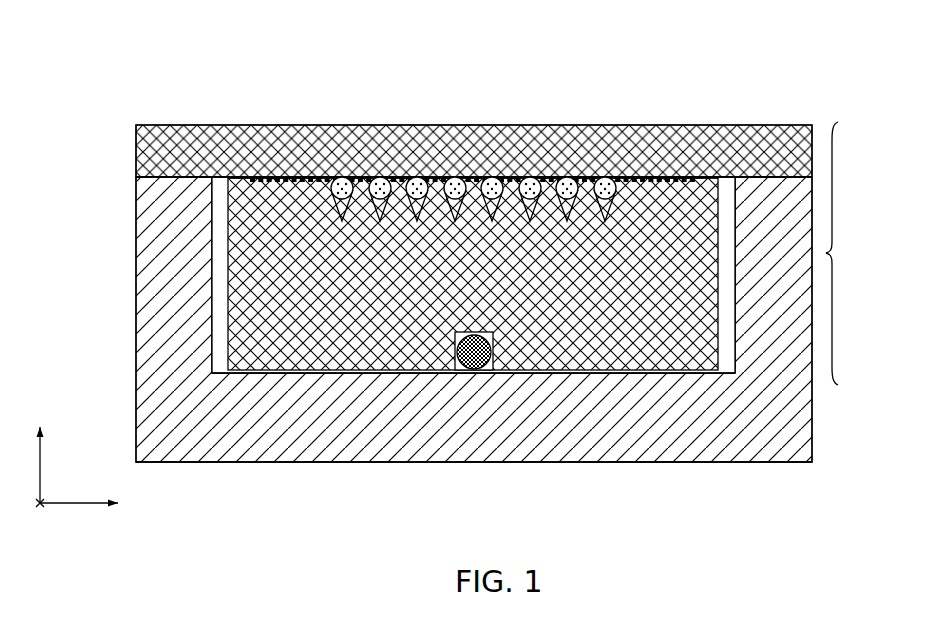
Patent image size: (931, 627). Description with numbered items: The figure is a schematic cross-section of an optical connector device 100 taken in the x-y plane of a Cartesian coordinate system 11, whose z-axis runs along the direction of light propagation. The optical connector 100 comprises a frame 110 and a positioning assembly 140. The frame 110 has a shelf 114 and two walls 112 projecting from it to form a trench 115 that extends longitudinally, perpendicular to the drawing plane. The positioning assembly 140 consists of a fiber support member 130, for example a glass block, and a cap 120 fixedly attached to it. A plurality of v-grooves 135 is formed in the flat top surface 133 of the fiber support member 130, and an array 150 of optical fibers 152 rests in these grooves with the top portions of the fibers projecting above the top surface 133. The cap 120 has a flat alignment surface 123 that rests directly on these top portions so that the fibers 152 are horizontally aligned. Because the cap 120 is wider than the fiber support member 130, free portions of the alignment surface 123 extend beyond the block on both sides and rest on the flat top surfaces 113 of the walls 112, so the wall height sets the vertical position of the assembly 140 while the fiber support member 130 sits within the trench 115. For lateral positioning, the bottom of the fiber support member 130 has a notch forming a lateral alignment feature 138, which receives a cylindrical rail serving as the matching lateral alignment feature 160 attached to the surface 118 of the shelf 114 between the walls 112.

The optical connector device 100 is at (495, 45).
The frame 110 is at (136, 318).
The walls 112 is at (195, 269).
The top surfaces 113 is at (167, 183).
The shelf 114 is at (500, 424).
The trench 115 is at (223, 188).
The surface of the shelf 118 is at (305, 377).
The cap 120 is at (474, 151).
The alignment surface 123 is at (193, 168).
The fiber support member 130 is at (490, 294).
The top surface 133 is at (305, 186).
The v-grooves 135 is at (598, 224).
The lateral alignment feature 138 is at (455, 338).
The positioning assembly 140 is at (859, 253).
The array 150 is at (617, 167).
The optical fibers 152 is at (411, 179).
The lateral alignment feature 160 is at (487, 333).
The Cartesian coordinate system 11 is at (53, 536).